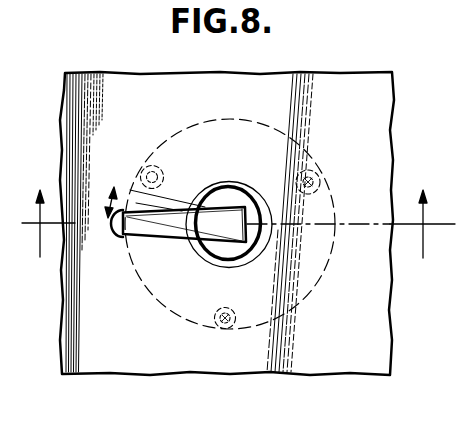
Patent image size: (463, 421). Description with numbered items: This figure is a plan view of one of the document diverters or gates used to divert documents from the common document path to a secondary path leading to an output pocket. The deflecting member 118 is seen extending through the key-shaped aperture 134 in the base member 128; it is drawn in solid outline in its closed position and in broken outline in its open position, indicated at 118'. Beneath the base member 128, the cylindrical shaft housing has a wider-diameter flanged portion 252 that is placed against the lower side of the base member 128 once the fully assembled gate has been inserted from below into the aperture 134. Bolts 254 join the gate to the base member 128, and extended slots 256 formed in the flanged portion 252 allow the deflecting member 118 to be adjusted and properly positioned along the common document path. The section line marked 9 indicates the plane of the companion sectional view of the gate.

The base member 128 is at (107, 82).
The section line 9- 9 is at (237, 224).
The flanged portion 252 is at (290, 307).
The deflecting member 118 is at (184, 245).
The deflecting member in open position 118' is at (160, 187).
The key-shaped aperture 134 is at (116, 239).
The bolts 254 is at (319, 169).
The extended slots 256 is at (313, 188).